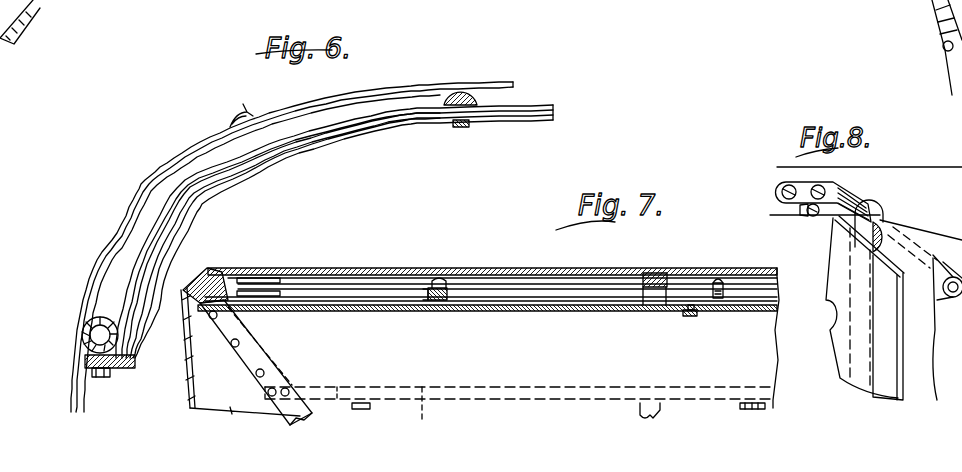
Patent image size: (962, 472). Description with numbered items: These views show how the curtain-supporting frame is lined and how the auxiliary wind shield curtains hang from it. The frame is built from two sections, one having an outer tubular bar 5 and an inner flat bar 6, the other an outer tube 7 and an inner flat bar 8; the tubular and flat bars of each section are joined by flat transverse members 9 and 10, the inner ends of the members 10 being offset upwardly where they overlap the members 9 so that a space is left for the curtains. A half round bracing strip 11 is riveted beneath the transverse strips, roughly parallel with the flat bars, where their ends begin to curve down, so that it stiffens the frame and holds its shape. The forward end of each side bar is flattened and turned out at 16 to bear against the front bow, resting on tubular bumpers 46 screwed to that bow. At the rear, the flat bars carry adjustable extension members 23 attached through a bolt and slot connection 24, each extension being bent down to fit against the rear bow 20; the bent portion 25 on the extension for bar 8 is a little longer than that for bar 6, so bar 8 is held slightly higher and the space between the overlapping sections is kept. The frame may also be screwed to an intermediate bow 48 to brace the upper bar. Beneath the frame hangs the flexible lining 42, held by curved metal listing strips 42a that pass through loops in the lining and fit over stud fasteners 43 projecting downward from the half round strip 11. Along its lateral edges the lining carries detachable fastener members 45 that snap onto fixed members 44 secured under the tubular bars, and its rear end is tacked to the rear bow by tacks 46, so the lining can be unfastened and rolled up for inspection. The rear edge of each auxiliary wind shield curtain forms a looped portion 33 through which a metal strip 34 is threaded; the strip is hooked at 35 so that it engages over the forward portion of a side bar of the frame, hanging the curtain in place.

In FIG. 6, the outer longitudinally extending tubular bar 5 is at (111, 317).
In FIG. 7, the inner longitudinally extending flat bar 6 is at (351, 297).
In FIG. 7, the outer longitudinally extending tube 7 is at (519, 411).
In FIG. 8, the outer longitudinally extending tube 7 is at (849, 204).
In FIG. 7, the inner longitudinally extending flat bar 8 is at (379, 286).
In FIG. 6, the flat transverse member 9 is at (377, 86).
In FIG. 7, the flat transverse member 9 is at (428, 292).
In FIG. 7, the flat transverse member 10 is at (453, 283).
In FIG. 6, the half round bracing strip 11 is at (470, 92).
In FIG. 7, the half round bracing strip 11 is at (687, 312).
In FIG. 8, the out-turned bearing end 16 is at (805, 185).
In FIG. 7, the rear bow 20 is at (209, 277).
In FIG. 7, the adjustable extension member 23 is at (263, 290).
In FIG. 7, the bolt and slot connection 24 is at (285, 268).
In FIG. 7, the downwardly and angularly bent portion 25 is at (249, 279).
In FIG. 8, the looped portion 33 is at (888, 244).
In FIG. 8, the metal strip 34 is at (863, 232).
In FIG. 8, the hook 35 is at (880, 212).
In FIG. 6, the lining 42 is at (274, 164).
In FIG. 7, the lining 42 is at (548, 312).
In FIG. 6, the listing strip 42a is at (326, 137).
In FIG. 7, the listing strip 42a is at (716, 314).
In FIG. 6, the stud fastener 43 is at (458, 121).
In FIG. 7, the stud fastener 43 is at (693, 314).
In FIG. 6, the fixed fastener member 44 is at (76, 343).
In FIG. 6, the detachable fastener member 45 is at (95, 379).
In FIG. 7, the detachable fastener member 45 is at (363, 410).
In FIG. 7, the tubular bumper 46 is at (212, 320).
In FIG. 8, the tubular bumper 46 is at (800, 210).
In FIG. 7, the intermediate bow 48 is at (648, 281).